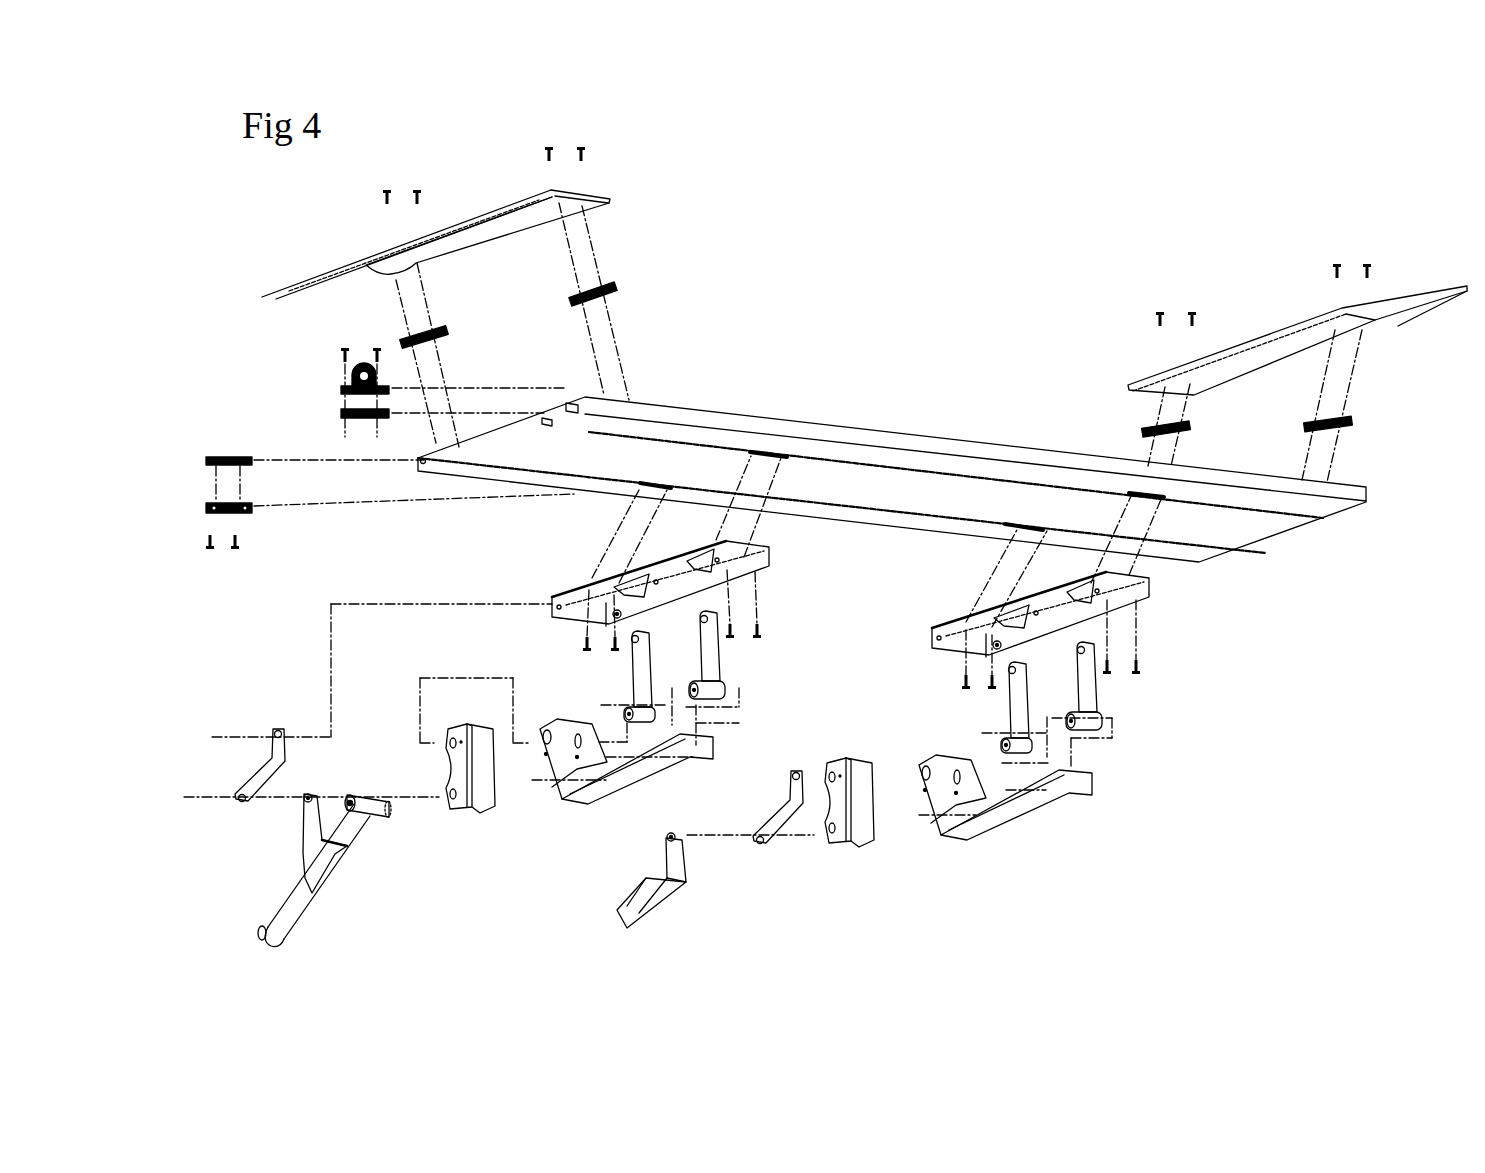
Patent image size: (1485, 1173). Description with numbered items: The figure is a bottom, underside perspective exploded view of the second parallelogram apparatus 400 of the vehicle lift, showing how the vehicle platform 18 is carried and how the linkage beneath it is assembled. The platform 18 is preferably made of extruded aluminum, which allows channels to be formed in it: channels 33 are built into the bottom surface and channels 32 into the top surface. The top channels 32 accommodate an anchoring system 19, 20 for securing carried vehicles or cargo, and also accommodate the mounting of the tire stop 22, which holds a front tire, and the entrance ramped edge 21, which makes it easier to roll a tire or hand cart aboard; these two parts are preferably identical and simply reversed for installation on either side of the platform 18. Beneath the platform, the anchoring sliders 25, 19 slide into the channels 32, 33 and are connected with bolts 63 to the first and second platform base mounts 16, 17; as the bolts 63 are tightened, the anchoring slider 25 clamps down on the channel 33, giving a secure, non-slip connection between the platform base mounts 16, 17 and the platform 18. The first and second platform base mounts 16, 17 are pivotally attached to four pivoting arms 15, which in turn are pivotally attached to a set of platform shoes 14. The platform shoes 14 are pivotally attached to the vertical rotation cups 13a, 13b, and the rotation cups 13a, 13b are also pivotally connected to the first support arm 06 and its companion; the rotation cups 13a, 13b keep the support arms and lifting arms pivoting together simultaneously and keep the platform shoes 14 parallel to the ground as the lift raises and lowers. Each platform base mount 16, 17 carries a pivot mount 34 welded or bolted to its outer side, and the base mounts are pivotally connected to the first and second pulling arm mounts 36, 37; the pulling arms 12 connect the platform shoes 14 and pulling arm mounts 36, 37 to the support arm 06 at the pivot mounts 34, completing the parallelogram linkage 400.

The second parallelogram apparatus 400 is at (905, 215).
The vehicle platform 18 is at (1215, 527).
The channels 33 is at (1083, 490).
The anchoring slider 25 is at (1011, 529).
The channels 32 is at (416, 458).
The anchoring system 20 is at (333, 386).
The anchoring slider 19 is at (338, 408).
The entrance ramped edge 21 is at (414, 237).
The tire stop 22 is at (1297, 333).
The bolts 63 is at (1152, 321).
The second platform base mount 17 is at (1130, 607).
The first platform base mount 16 is at (740, 572).
The pivoting arms 15 is at (640, 683).
The pivot mount 34 is at (550, 605).
The vertical rotation cup 13b is at (865, 825).
The vertical rotation cup 13a is at (482, 798).
The platform shoes 14 is at (660, 765).
The pulling arms 12 is at (255, 765).
The first pulling arm mount 36 is at (305, 829).
The first support arm 06 is at (300, 895).
The second pulling arm mount 37 is at (677, 863).